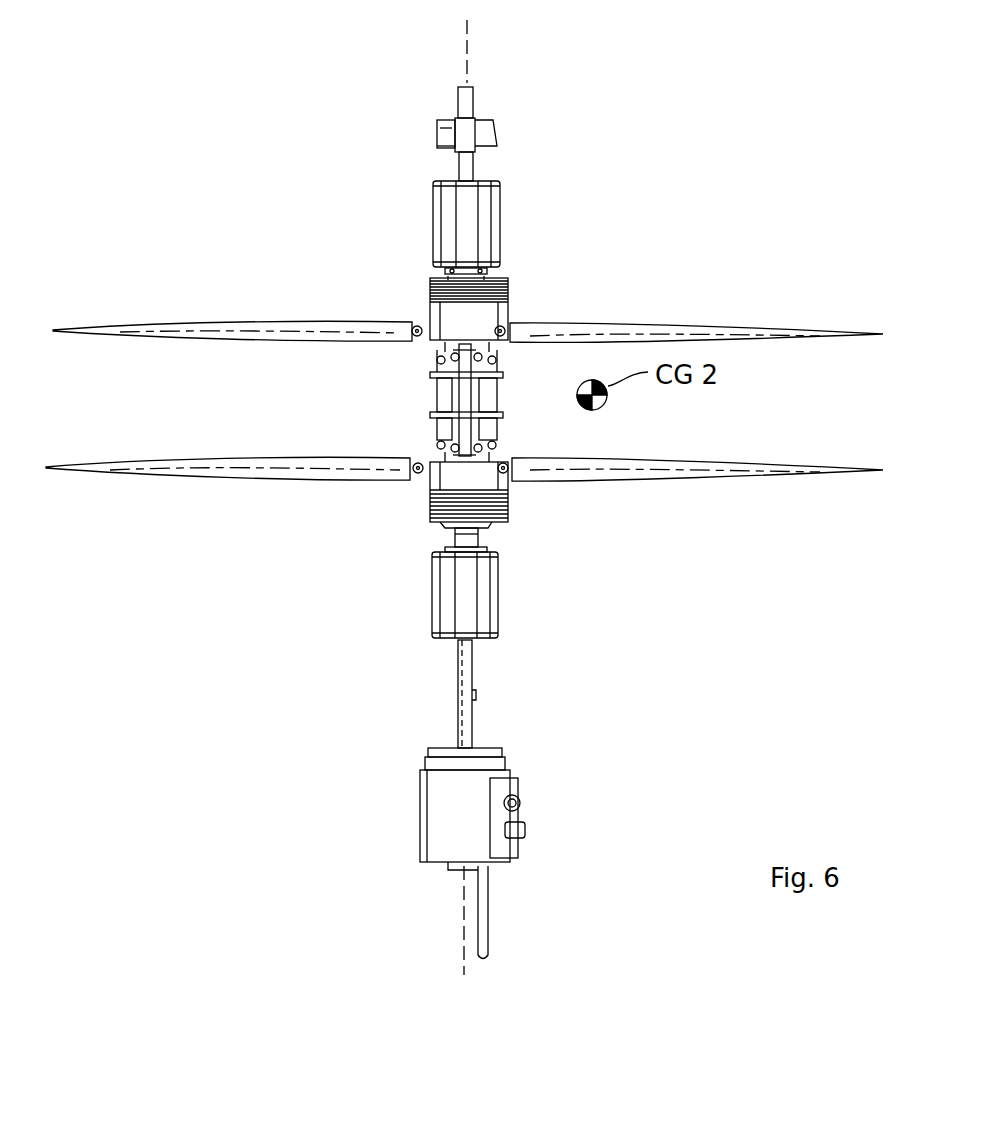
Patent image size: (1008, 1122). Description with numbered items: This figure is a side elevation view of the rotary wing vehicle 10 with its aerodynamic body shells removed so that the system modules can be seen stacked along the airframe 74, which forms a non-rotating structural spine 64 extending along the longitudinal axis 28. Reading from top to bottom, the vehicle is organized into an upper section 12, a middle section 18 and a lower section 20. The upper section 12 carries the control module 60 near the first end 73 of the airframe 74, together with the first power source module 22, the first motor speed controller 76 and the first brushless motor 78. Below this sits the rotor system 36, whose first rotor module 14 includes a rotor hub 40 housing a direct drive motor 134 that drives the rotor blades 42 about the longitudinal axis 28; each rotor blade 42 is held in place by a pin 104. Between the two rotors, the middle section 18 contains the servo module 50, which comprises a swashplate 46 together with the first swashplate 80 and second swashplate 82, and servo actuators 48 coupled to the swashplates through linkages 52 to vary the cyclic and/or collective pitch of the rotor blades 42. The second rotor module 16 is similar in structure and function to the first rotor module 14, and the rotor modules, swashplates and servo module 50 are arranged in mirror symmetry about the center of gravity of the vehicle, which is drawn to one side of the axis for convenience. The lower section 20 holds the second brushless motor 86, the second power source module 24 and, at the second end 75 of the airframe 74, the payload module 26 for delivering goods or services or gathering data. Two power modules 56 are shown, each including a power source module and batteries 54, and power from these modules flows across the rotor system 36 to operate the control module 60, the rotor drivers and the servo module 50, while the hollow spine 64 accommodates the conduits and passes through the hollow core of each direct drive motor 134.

The rotary wing vehicle 10 is at (713, 46).
The upper section 12 is at (732, 157).
The first rotor module 14 is at (316, 262).
The second rotor module 16 is at (594, 531).
The middle section 18 is at (707, 405).
The lower section 20 is at (657, 624).
The first power source module 22 is at (554, 163).
The second power source module 24 is at (393, 606).
The payload module 26 is at (380, 817).
The longitudinal axis 28 is at (470, 48).
The rotor system 36 is at (650, 240).
The rotor hub 40 is at (440, 522).
The rotor blades 42 is at (120, 326).
The swashplate 46 is at (420, 366).
The servo actuator 48 is at (430, 394).
The servo module 50 is at (290, 395).
The linkages 52 is at (427, 345).
The batteries 54 is at (503, 199).
The power module 56 is at (400, 224).
The control module 60 is at (421, 113).
The non-rotating structural spine 64 is at (478, 165).
The first end 73 is at (437, 157).
The airframe 74 is at (480, 706).
The second end 75 is at (425, 885).
The first motor speed controller 76 is at (498, 270).
The first brushless motor 78 is at (537, 280).
The first swashplate 80 is at (527, 353).
The second swashplate 82 is at (518, 445).
The second brushless motor 86 is at (380, 513).
The pin 104 is at (418, 320).
The direct drive motor 134 is at (417, 283).